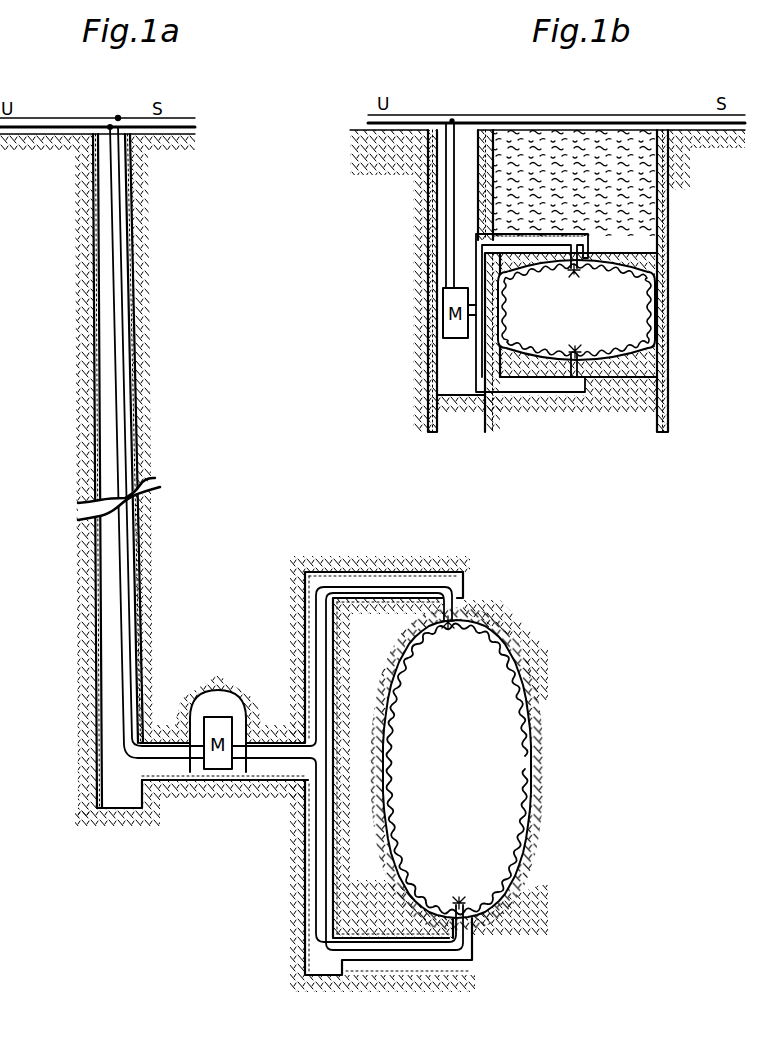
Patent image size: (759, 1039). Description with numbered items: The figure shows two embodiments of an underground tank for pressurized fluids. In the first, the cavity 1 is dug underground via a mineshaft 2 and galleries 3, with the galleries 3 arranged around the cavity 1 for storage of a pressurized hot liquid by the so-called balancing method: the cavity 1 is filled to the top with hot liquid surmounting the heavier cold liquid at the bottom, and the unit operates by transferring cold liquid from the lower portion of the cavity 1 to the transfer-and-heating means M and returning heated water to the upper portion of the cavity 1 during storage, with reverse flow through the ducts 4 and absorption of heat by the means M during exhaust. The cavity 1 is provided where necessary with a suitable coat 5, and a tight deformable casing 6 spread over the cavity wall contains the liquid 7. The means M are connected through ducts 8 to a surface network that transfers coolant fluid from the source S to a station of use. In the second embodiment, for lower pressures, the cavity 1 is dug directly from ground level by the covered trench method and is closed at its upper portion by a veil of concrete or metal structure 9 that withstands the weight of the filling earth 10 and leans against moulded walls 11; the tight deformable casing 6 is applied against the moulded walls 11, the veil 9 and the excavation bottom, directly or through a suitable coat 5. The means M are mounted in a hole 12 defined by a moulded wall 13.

In FIG. 1a, the cavity 1 is at (534, 783).
In FIG. 1b, the cavity 1 is at (623, 308).
In FIG. 1a, the mineshaft 2 is at (108, 390).
In FIG. 1a, the galleries 3 is at (373, 583).
In FIG. 1a, the ducts 4 is at (421, 590).
In FIG. 1b, the ducts 4 is at (530, 247).
In FIG. 1a, the coat 5 is at (540, 697).
In FIG. 1b, the coat 5 is at (670, 284).
In FIG. 1a, the tight deformable casing 6 is at (497, 642).
In FIG. 1b, the tight deformable casing 6 is at (655, 345).
In FIG. 1a, the liquid 7 is at (488, 842).
In FIG. 1b, the liquid 7 is at (610, 327).
In FIG. 1a, the ducts 8 is at (122, 302).
In FIG. 1b, the ducts 8 is at (450, 243).
In FIG. 1b, the veil of concrete or metal structure 9 is at (637, 257).
In FIG. 1b, the filling earth 10 is at (598, 152).
In FIG. 1b, the moulded walls 11 is at (655, 337).
In FIG. 1b, the hole 12 is at (463, 205).
In FIG. 1b, the moulded wall 13 is at (427, 364).